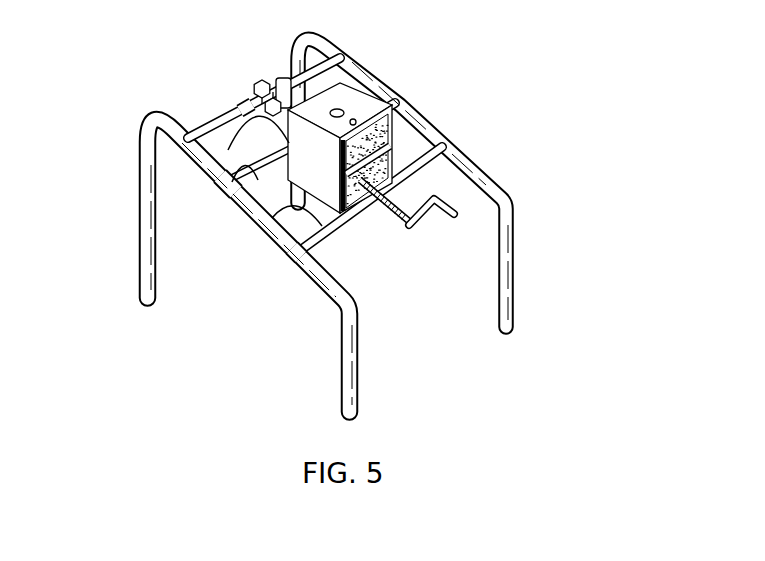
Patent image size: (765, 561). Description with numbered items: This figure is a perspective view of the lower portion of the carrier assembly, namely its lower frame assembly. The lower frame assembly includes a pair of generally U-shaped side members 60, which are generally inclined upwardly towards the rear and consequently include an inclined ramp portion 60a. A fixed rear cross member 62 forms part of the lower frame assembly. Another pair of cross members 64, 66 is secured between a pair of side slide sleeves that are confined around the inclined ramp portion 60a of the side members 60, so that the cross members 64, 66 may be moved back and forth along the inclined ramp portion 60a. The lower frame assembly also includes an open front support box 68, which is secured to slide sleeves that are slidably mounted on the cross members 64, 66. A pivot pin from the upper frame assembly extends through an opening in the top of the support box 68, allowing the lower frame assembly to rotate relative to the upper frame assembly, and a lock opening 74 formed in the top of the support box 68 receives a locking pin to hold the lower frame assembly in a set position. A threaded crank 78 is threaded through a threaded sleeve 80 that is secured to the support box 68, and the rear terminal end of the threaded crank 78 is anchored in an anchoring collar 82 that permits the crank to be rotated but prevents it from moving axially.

The side members 60 is at (140, 176).
The inclined ramp portion 60a is at (330, 274).
The fixed rear cross member 62 is at (221, 126).
The cross member 64 is at (222, 186).
The cross member 66 is at (258, 229).
The open front support box 68 is at (221, 176).
The lock opening 74 is at (353, 119).
The threaded crank 78 is at (440, 222).
The threaded sleeve 80 is at (430, 140).
The anchoring collar 82 is at (280, 80).